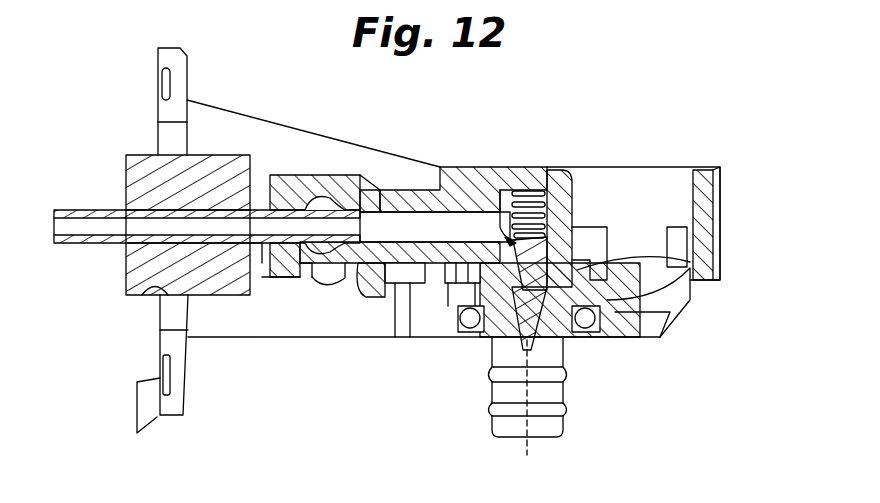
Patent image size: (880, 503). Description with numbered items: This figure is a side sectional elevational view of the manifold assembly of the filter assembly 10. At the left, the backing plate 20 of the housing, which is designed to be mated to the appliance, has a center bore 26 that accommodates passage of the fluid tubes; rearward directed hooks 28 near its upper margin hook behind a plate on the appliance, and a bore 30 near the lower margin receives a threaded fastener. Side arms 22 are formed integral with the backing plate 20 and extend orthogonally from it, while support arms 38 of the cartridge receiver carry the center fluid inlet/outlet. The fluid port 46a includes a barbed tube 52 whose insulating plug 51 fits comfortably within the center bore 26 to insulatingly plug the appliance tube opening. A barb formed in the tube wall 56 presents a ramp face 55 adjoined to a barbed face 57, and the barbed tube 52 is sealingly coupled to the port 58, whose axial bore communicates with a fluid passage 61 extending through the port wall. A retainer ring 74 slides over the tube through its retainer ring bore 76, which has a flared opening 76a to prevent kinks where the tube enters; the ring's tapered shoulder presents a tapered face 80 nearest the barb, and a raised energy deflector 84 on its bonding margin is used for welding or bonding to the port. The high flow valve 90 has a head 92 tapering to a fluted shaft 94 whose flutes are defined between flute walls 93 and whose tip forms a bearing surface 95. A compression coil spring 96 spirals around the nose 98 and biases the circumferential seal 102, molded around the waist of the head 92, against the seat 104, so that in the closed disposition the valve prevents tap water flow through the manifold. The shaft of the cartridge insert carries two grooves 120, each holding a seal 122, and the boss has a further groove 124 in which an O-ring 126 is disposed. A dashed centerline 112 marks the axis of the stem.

The filter assembly 10 is at (351, 72).
The backing plate 20 is at (160, 337).
The side arms 22 is at (210, 340).
The center bore 26 is at (142, 290).
The hooks 28 is at (142, 411).
The bores 30 is at (320, 196).
The support arms 38 is at (665, 225).
The fluid port 46a is at (365, 284).
The insulating plug 51 is at (126, 172).
The barbed tube 52 is at (104, 244).
The ramp face 55 is at (372, 192).
The tube wall 56 is at (100, 210).
The barbed face 57 is at (292, 188).
The port 58 is at (415, 190).
The fluid passage 61 is at (470, 222).
The retainer ring 74 is at (268, 265).
The retainer ring bore 76 is at (257, 245).
The flared opening 76a is at (262, 208).
The tapered face 80 is at (332, 265).
The raised energy deflector 84 is at (290, 272).
The high flow valve 90 is at (592, 250).
The head 92 is at (518, 205).
The flute walls 93 is at (578, 342).
The fluted shaft 94 is at (562, 352).
The bearing surface 95 is at (510, 342).
The compression coil spring 96 is at (542, 235).
The nose 98 is at (566, 245).
The circumferential seal 102 is at (702, 273).
The seat 104 is at (688, 300).
The axis 112 is at (530, 445).
The grooves 120 is at (498, 388).
The seal 122 is at (566, 404).
The groove 124 is at (452, 330).
The O-ring 126 is at (662, 322).